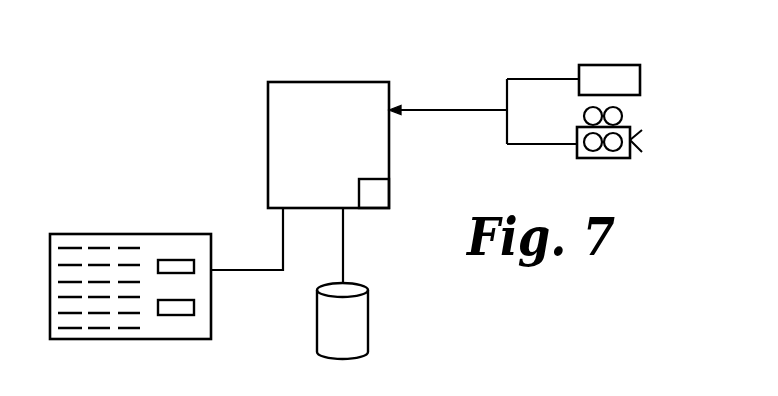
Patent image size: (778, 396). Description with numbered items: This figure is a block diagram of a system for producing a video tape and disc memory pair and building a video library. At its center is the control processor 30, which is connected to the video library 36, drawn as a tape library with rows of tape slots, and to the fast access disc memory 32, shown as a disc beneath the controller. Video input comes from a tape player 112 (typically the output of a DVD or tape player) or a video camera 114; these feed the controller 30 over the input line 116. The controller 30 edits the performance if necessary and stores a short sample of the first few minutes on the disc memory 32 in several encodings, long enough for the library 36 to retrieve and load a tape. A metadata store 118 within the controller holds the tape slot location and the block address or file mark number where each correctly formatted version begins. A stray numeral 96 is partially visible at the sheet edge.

The control processor 30 is at (280, 110).
The fast access disc memory 32 is at (360, 332).
The video library 36 is at (53, 250).
The tape player 112 is at (639, 67).
The video camera 114 is at (612, 158).
The input line 116 is at (435, 108).
The metadata store 118 is at (377, 197).
The numeral (partially visible) 96 is at (650, 387).